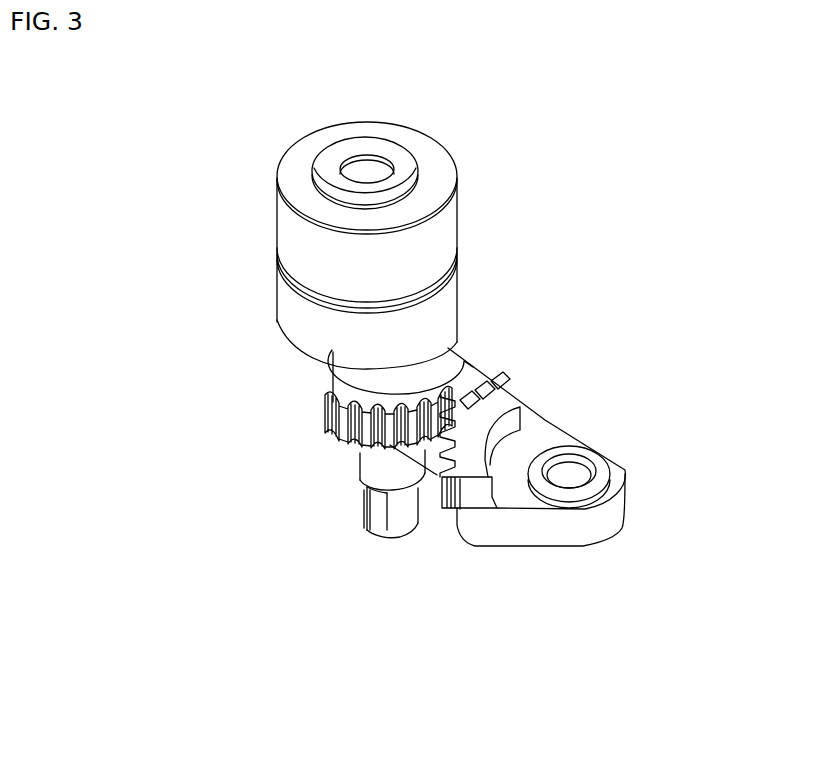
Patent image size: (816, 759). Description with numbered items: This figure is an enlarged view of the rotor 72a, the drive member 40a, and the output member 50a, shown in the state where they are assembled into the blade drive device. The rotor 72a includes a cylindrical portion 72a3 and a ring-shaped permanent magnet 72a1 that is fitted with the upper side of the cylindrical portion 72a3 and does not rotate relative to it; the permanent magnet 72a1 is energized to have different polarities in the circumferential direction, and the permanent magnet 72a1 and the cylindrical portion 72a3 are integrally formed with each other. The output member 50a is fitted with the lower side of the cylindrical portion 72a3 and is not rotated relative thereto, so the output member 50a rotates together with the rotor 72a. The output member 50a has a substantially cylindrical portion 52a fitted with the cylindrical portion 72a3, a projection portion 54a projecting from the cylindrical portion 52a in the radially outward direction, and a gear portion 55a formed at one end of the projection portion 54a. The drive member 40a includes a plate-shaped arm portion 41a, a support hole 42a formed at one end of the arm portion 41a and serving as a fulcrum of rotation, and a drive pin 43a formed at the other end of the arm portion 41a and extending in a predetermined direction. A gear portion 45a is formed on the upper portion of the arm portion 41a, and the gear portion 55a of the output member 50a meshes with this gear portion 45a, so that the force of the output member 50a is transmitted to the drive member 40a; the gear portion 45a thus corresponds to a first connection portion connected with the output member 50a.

The drive member 40a is at (594, 496).
The arm portion 41a is at (538, 438).
The support hole 42a is at (577, 481).
The drive pin 43a is at (383, 517).
The gear portion 45a is at (455, 497).
The output member 50a is at (421, 245).
The cylindrical portion 52a is at (280, 322).
The projection portion 54a is at (406, 404).
The gear portion 55a is at (327, 425).
The rotor 72a is at (474, 171).
The permanent magnet 72a1 is at (437, 225).
The cylindrical portion 72a3 is at (397, 153).